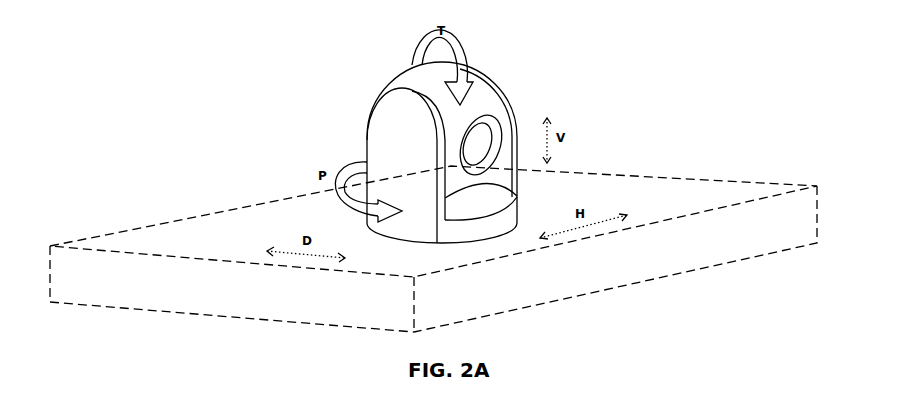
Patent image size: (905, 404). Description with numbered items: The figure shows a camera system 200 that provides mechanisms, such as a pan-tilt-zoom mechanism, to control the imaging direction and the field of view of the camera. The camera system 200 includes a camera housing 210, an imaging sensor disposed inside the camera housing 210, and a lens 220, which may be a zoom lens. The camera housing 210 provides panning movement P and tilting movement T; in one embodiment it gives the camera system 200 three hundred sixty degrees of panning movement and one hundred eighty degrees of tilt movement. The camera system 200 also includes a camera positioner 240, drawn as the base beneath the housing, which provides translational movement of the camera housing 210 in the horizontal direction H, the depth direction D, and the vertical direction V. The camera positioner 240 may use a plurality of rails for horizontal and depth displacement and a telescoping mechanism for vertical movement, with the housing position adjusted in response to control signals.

The camera system 200 is at (431, 140).
The camera housing 210 is at (387, 132).
The lens 220 is at (487, 118).
The camera positioner 240 is at (194, 225).